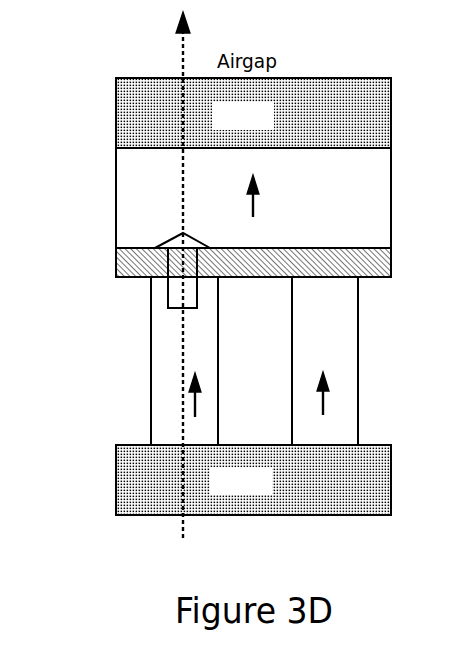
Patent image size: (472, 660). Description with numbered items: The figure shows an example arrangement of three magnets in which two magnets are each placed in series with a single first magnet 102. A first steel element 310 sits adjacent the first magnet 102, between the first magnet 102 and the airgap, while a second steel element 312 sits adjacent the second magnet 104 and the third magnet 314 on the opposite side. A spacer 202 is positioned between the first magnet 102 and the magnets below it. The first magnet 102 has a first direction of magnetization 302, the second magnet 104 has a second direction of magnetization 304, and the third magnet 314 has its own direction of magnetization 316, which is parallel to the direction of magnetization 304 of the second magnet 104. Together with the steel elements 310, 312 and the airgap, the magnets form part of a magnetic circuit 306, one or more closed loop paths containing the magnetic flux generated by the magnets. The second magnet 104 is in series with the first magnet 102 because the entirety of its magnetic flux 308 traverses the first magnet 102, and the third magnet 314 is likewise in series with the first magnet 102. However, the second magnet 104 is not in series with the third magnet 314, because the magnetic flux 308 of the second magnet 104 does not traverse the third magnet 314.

The first steel element 310 is at (116, 112).
The first magnet 102 is at (116, 195).
The spacer 202 is at (116, 262).
The magnetic circuit 306 is at (184, 160).
The first direction of magnetization 302 is at (254, 212).
The magnetic flux 308 is at (151, 302).
The second magnet 104 is at (150, 384).
The third magnet 314 is at (359, 360).
The second direction of magnetization 304 is at (195, 407).
The direction of magnetization 316 is at (324, 403).
The second steel element 312 is at (116, 480).